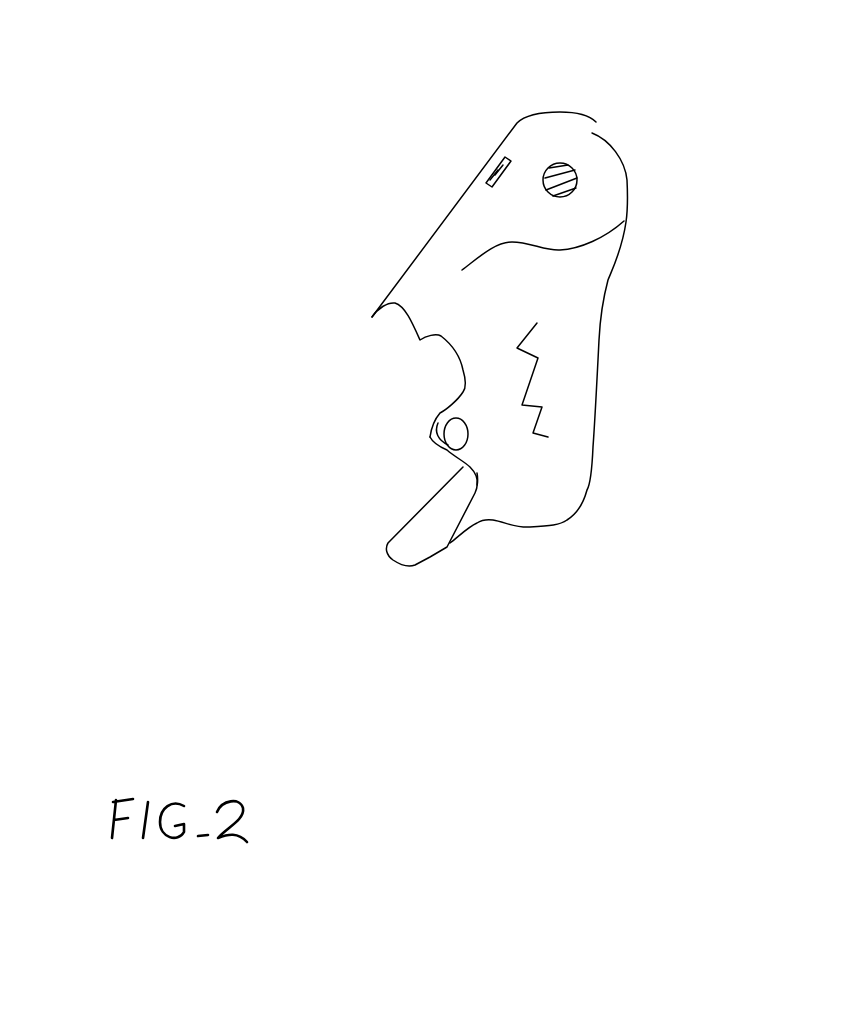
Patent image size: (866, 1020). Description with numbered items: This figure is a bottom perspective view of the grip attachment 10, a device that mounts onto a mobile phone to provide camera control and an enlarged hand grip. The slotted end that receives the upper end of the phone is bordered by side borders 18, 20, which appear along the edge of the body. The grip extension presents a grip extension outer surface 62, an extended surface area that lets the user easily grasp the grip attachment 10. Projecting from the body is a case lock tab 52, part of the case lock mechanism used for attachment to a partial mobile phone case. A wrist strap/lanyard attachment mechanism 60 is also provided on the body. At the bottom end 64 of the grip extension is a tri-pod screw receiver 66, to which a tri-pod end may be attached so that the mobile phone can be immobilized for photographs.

The grip attachment 10 is at (802, 193).
The side border 18 is at (440, 632).
The side border 20 is at (342, 304).
The case lock tab 52 is at (397, 450).
The wrist strap/lanyard attachment mechanism 60 is at (488, 168).
The grip extension outer surface 62 is at (668, 365).
The bottom end 64 is at (336, 122).
The tri-pod screw receiver 66 is at (668, 113).